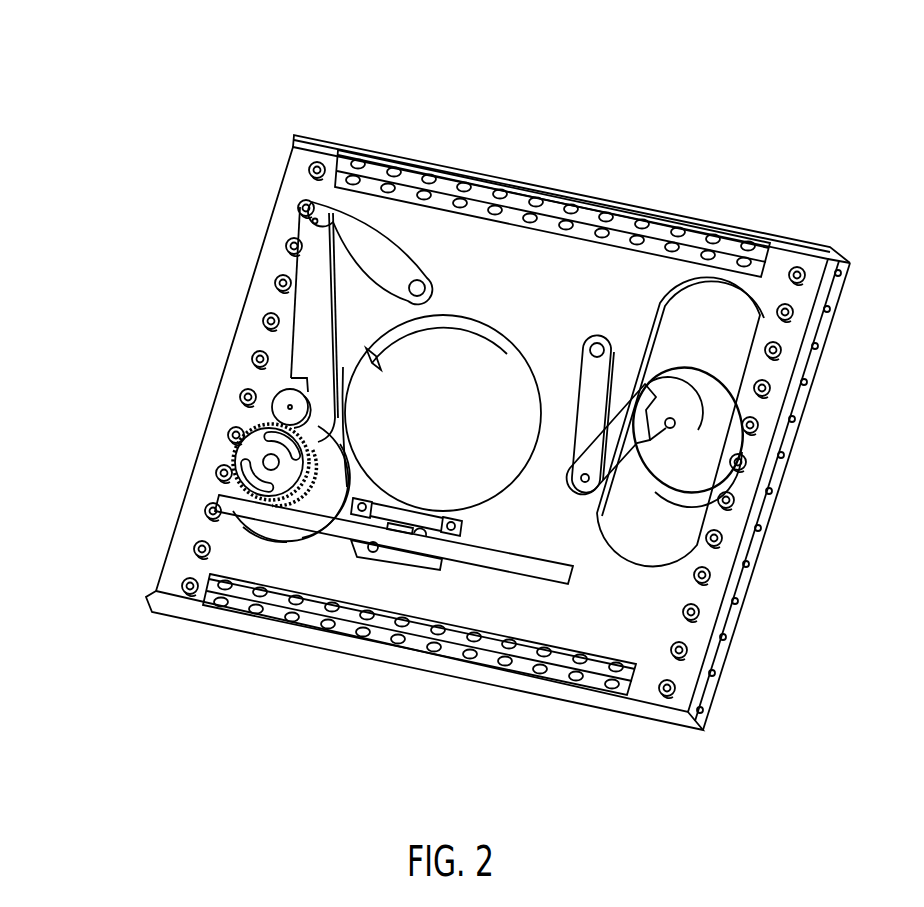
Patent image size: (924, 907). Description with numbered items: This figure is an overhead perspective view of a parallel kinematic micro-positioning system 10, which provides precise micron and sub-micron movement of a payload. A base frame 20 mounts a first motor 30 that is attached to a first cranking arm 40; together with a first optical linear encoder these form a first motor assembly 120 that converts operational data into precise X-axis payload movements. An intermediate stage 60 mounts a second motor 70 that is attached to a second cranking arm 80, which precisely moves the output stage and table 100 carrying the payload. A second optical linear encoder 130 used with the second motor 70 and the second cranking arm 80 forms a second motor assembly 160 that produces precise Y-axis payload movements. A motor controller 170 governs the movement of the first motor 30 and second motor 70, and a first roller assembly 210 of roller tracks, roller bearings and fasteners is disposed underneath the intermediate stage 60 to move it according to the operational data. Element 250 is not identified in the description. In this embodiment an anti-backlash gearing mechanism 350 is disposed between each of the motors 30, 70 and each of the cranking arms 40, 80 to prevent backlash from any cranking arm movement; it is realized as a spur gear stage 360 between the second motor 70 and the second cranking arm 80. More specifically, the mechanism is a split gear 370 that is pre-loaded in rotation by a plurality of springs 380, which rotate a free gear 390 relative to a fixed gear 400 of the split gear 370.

The parallel kinematic micro-positioning system 10 is at (743, 118).
The base frame 20 is at (727, 667).
The first motor 30 is at (693, 455).
The first cranking arm 40 is at (592, 393).
The intermediate stage 60 is at (810, 330).
The second motor 70 is at (285, 482).
The second cranking arm 80 is at (375, 262).
The output stage and table 100 is at (229, 343).
The first motor assembly 120 is at (707, 430).
The second optical linear encoder 130 is at (553, 573).
The second motor assembly 160 is at (265, 526).
The motor controller 170 is at (427, 565).
The first roller assembly 210 is at (715, 583).
The top rail 250 is at (563, 188).
The anti-backlash gearing mechanism 350 is at (269, 462).
The spur gear stage 360 is at (294, 478).
The split gear 370 is at (237, 430).
The springs 380 is at (255, 454).
The free gear 390 is at (240, 523).
The fixed gear 400 is at (283, 405).